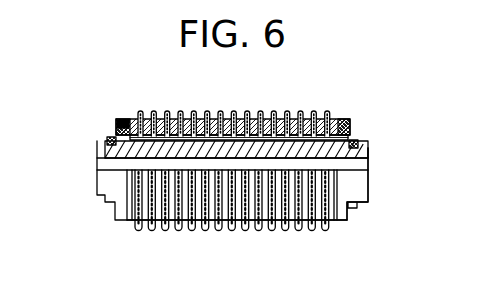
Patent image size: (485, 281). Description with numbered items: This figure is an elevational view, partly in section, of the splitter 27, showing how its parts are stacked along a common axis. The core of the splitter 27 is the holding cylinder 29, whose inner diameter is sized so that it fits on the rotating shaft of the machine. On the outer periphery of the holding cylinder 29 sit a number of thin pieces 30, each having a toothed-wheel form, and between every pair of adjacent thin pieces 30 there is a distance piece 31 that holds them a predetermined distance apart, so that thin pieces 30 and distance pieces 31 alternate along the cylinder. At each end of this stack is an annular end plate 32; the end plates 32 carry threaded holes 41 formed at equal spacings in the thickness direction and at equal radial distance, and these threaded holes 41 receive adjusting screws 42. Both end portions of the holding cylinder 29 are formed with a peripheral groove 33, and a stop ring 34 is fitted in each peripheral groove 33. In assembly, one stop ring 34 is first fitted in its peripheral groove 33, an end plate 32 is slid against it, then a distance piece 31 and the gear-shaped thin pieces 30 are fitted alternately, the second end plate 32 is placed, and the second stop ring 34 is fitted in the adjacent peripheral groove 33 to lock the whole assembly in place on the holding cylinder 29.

The splitter 27 is at (220, 98).
The holding cylinder 29 is at (230, 182).
The thin piece 30 is at (235, 113).
The distance piece 31 is at (194, 113).
The end plate 32 is at (123, 119).
The peripheral groove 33 is at (362, 147).
The stop ring 34 is at (360, 207).
The threaded hole 41 is at (110, 137).
The adjusting screw 42 is at (116, 121).